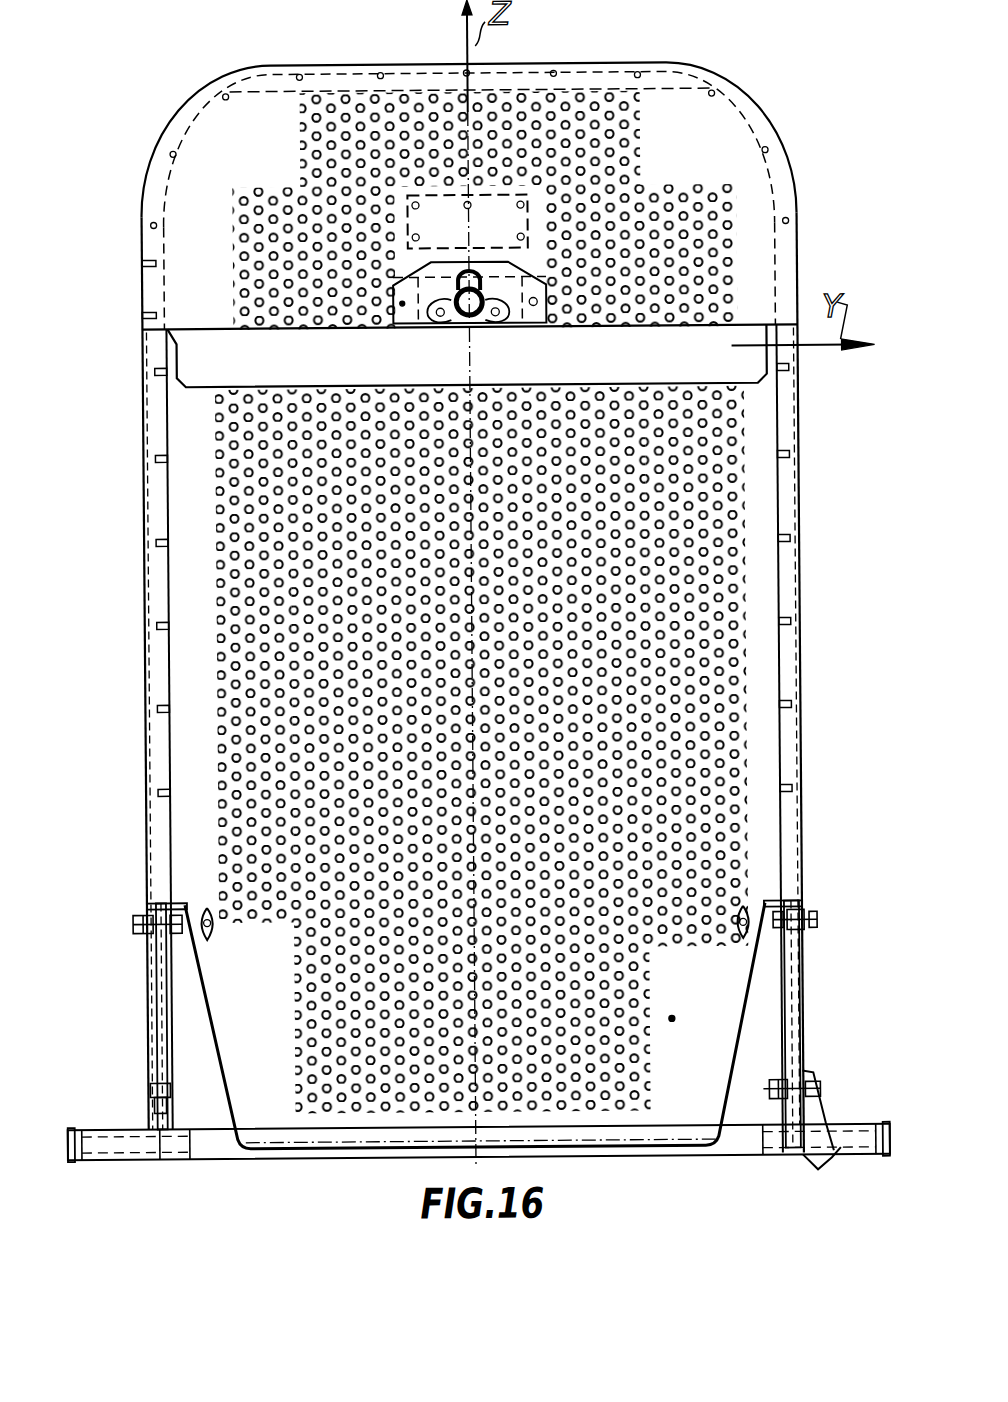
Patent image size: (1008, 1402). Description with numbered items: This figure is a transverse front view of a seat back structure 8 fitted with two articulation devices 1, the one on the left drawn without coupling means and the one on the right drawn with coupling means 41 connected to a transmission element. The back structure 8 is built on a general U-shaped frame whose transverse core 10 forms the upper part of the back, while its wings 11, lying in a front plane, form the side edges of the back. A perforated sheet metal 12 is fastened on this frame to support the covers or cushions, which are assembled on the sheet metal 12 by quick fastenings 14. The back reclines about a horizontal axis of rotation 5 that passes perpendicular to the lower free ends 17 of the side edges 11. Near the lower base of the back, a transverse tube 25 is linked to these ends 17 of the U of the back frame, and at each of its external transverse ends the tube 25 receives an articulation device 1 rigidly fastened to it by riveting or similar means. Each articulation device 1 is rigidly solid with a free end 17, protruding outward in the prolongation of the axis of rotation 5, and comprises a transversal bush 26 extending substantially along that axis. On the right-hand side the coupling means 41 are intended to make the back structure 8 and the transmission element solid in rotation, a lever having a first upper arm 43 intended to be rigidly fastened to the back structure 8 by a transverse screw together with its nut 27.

The transverse core 10 is at (370, 72).
The wings 11 is at (158, 420).
The back structure 8 is at (198, 590).
The quick fastenings 14 is at (783, 908).
The axis of rotation 5 is at (293, 1049).
The lower free ends 17 is at (156, 1010).
The articulation device 1 is at (136, 1063).
The nut 27 is at (763, 1111).
The transverse tube 25 is at (202, 1130).
The transversal bush 26 is at (62, 1094).
The first upper arm 43 is at (822, 1123).
The coupling means 41 is at (800, 1161).
The perforated sheet metal 12 is at (679, 999).